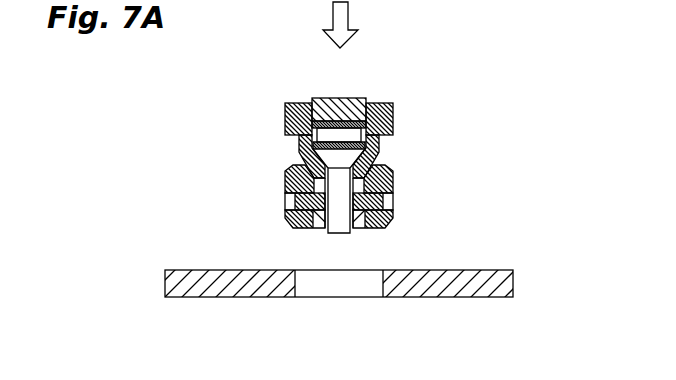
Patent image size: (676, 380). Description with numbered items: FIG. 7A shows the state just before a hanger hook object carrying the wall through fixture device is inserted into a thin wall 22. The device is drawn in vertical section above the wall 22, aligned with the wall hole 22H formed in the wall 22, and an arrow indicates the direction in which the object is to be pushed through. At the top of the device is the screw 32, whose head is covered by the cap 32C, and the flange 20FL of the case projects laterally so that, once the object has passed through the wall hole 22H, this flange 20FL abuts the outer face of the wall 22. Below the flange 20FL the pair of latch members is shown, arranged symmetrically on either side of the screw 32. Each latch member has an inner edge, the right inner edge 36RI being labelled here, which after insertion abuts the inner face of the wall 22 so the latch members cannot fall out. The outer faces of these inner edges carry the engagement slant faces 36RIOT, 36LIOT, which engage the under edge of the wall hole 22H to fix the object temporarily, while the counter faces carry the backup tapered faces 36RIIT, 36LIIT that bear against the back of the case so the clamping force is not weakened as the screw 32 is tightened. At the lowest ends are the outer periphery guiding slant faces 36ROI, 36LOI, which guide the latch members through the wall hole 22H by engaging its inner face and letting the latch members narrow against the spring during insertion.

The cap 32C is at (357, 98).
The flange 20FL is at (394, 114).
The screw 32 is at (343, 203).
The backup tapered face 36RIIT is at (297, 150).
The backup tapered face 36LIIT is at (383, 150).
The inner edge 36RI is at (298, 159).
The engagement slant face 36LIOT is at (393, 165).
The engagement slant face 36RIOT is at (292, 167).
The outer periphery guiding slant face 36LOI is at (393, 222).
The outer periphery guiding slant face 36ROI is at (290, 223).
The wall 22 is at (465, 283).
The wall hole 22H is at (332, 288).